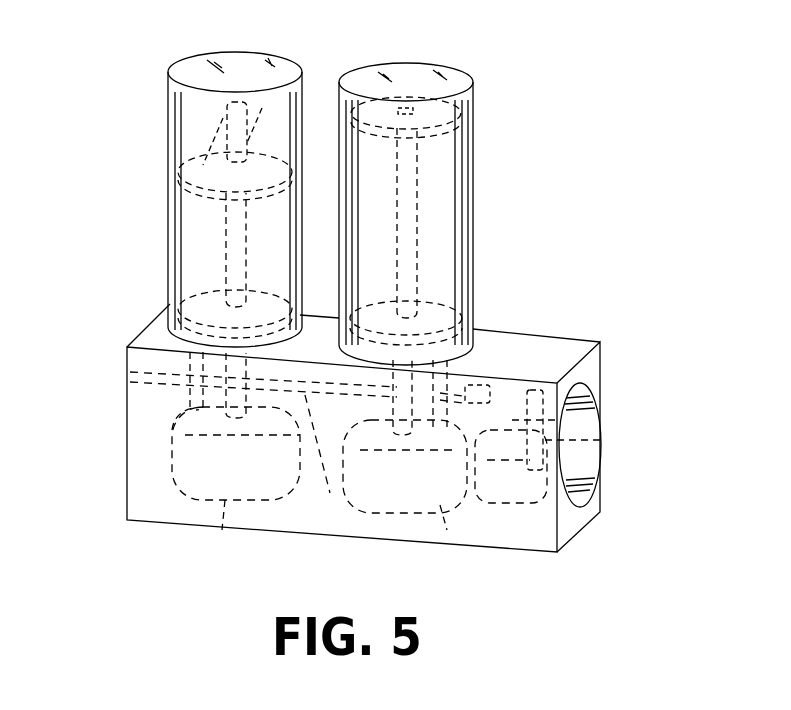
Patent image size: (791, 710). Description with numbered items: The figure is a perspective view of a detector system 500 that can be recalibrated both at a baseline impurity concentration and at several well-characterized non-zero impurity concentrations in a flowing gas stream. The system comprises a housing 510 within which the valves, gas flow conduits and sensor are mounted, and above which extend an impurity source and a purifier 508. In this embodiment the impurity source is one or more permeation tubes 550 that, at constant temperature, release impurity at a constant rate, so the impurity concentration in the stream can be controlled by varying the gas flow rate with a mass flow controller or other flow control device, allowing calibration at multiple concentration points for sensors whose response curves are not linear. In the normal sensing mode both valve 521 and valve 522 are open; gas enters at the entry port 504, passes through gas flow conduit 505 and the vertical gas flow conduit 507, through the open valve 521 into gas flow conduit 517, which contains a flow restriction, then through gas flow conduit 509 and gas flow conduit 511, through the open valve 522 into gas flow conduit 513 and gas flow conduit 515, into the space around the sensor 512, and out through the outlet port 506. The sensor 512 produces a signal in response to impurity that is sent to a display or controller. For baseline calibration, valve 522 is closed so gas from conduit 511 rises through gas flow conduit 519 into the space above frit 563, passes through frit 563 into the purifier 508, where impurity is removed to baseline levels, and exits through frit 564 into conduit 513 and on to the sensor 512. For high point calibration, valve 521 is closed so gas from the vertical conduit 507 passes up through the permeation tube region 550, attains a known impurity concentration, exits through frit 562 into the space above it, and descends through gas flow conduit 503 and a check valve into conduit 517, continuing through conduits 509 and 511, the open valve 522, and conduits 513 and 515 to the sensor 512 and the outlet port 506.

The detector system 500 is at (604, 165).
The gas flow conduit 503 is at (225, 272).
The entry port 504 is at (160, 373).
The gas flow conduit 505 is at (180, 385).
The outlet port 506 is at (593, 462).
The vertical gas flow conduit 507 is at (175, 420).
The purifier 508 is at (472, 216).
The gas flow conduit 509 is at (314, 460).
The housing 510 is at (603, 365).
The gas flow conduit 511 is at (405, 436).
The sensor 512 is at (595, 440).
The gas flow conduit 513 is at (511, 468).
The gas flow conduit 515 is at (468, 398).
The gas flow conduit 517 is at (236, 453).
The gas flow conduit 519 is at (415, 173).
The valve 521 is at (222, 530).
The valve 522 is at (447, 530).
The permeation tube 550 is at (223, 118).
The frit 562 is at (185, 160).
The frit 563 is at (446, 112).
The frit 564 is at (452, 314).